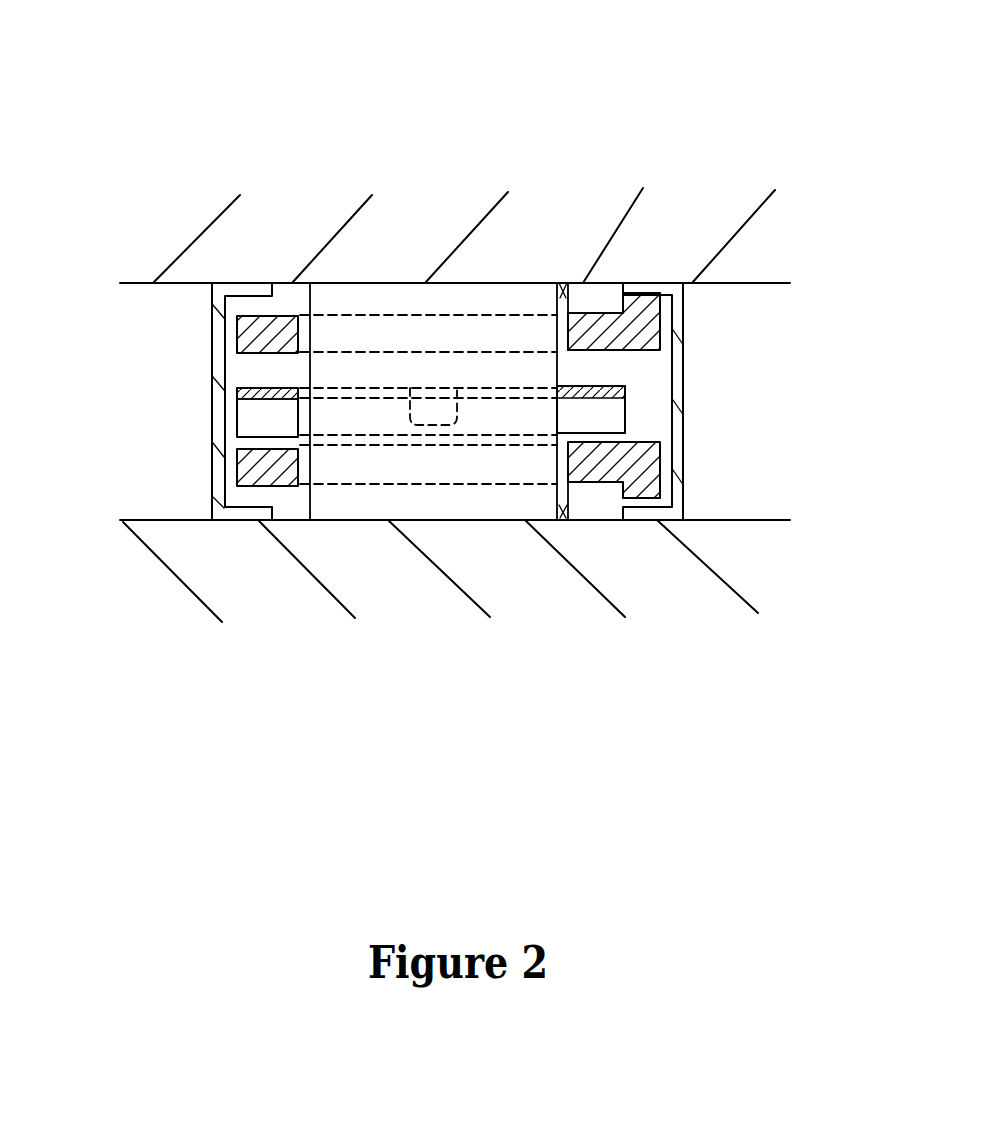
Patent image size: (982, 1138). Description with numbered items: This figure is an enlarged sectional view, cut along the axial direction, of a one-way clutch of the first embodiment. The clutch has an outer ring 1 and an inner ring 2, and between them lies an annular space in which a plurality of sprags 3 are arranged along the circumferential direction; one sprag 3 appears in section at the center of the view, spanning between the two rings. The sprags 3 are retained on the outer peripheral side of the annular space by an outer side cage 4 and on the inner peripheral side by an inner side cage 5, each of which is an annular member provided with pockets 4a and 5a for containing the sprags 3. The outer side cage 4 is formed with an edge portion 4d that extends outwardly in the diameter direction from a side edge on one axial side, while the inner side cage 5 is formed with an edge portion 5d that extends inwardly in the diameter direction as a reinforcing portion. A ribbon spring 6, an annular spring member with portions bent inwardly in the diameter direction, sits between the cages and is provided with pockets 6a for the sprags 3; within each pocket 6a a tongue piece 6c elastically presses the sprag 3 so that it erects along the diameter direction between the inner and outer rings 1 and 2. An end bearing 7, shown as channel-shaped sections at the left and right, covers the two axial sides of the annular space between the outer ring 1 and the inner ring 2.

The outer ring 1 is at (272, 260).
The inner ring 2 is at (348, 553).
The sprag 3 is at (490, 283).
The outer side cage 4 is at (605, 352).
The pocket 4a is at (568, 283).
The edge portion 4d is at (653, 303).
The inner side cage 5 is at (635, 443).
The pocket 5a is at (565, 507).
The edge portion 5d is at (648, 484).
The ribbon spring 6 is at (625, 413).
The pocket 6a is at (300, 390).
The tongue piece 6c is at (482, 430).
The end bearing 7 is at (212, 437).